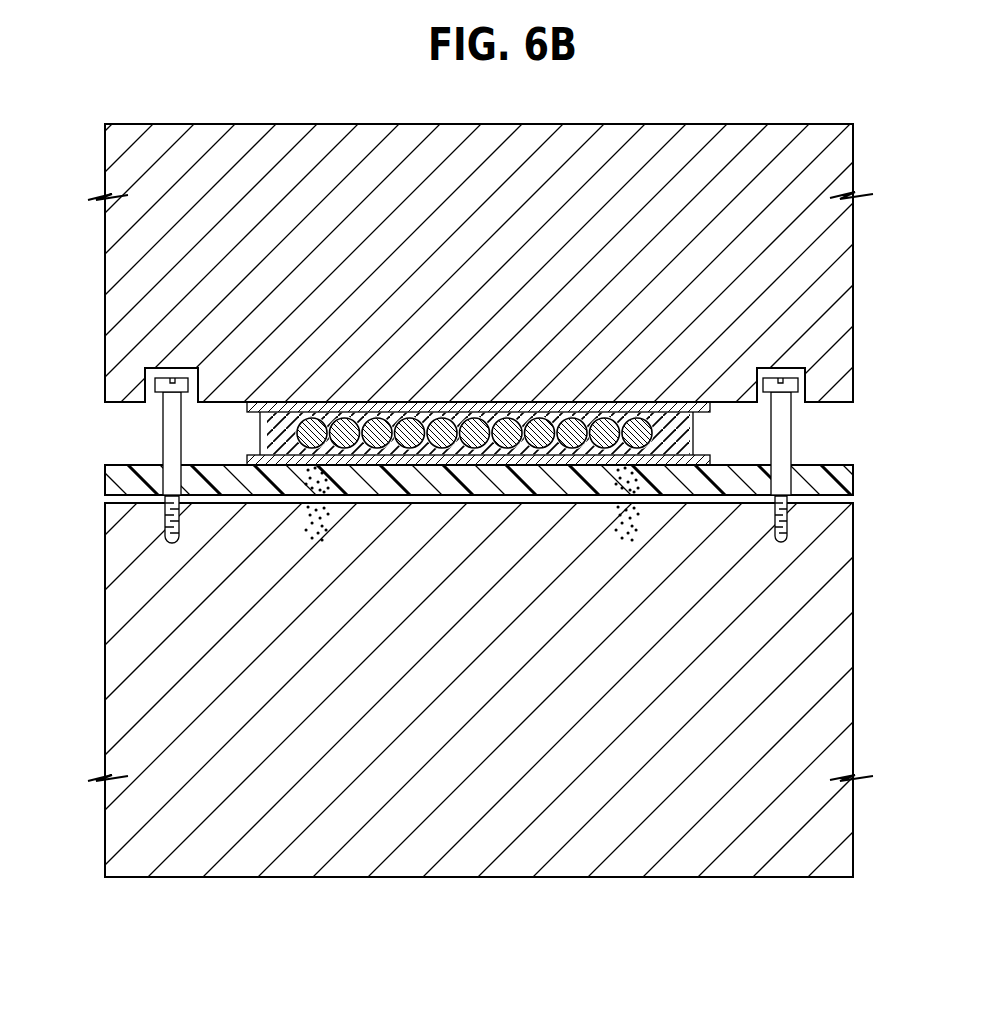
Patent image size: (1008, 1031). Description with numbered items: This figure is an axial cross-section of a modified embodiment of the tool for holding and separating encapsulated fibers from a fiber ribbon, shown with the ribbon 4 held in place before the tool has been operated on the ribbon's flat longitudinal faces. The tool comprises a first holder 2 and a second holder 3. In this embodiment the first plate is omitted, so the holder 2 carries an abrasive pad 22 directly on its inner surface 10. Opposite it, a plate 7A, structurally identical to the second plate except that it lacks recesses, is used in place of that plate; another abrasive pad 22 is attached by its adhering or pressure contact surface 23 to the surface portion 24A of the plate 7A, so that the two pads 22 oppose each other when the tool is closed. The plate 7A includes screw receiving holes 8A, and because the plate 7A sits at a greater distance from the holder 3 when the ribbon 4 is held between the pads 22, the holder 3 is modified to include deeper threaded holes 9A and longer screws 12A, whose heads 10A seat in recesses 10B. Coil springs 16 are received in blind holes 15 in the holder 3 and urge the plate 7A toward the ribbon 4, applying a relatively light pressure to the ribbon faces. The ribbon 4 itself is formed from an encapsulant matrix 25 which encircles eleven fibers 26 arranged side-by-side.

The first holder 2 is at (853, 165).
The second holder 3 is at (853, 655).
The optical fiber ribbon 4 is at (693, 447).
The plate 7A is at (853, 491).
The screw receiving holes 8A is at (792, 477).
The deeper threaded holes 9A is at (162, 522).
The inner surface face 10 is at (837, 408).
The screw head 10A is at (166, 374).
The recess 10B is at (220, 352).
The longer screws 12A is at (788, 453).
The blind holes 15 is at (640, 515).
The coil springs 16 is at (325, 530).
The abrasive pads or strips 22 is at (363, 412).
The adhering or pressure contact surface 23 is at (550, 405).
The surface portion of the plate 24A is at (167, 465).
The encapsulant matrix 25 is at (478, 420).
The fibers 26 is at (642, 422).